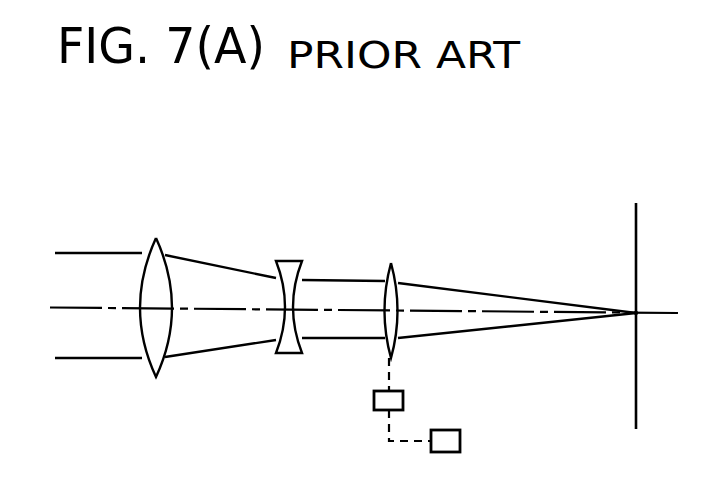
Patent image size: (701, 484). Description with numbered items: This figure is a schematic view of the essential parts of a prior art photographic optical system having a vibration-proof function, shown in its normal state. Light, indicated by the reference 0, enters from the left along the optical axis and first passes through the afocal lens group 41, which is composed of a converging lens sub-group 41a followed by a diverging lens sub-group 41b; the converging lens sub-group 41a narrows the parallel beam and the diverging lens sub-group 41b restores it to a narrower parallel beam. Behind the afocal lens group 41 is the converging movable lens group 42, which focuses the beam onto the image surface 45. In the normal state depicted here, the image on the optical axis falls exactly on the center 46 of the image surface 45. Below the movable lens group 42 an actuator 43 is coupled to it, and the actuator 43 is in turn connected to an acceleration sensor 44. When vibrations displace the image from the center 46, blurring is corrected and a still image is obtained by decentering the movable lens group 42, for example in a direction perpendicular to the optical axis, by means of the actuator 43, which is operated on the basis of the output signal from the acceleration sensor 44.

The incident light beam 0 is at (45, 308).
The afocal lens group 41 is at (302, 172).
The converging lens sub-group 41a is at (157, 238).
The diverging lens sub-group 41b is at (287, 261).
The converging movable lens group 42 is at (392, 265).
The actuator 43 is at (403, 399).
The acceleration sensor 44 is at (460, 441).
The image surface 45 is at (634, 228).
The center of image surface 46 is at (634, 311).